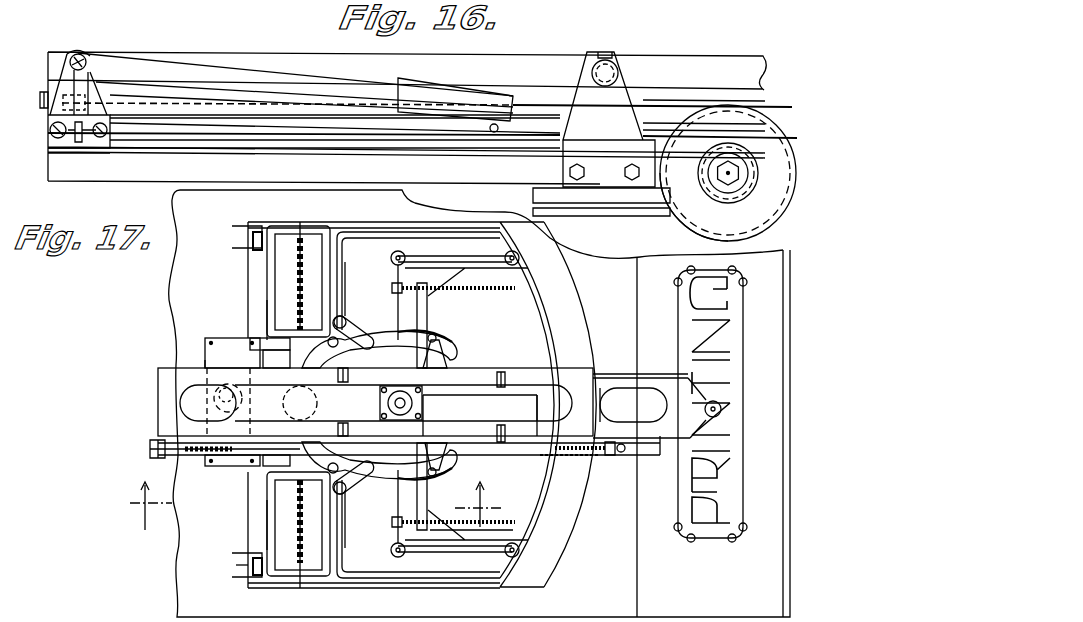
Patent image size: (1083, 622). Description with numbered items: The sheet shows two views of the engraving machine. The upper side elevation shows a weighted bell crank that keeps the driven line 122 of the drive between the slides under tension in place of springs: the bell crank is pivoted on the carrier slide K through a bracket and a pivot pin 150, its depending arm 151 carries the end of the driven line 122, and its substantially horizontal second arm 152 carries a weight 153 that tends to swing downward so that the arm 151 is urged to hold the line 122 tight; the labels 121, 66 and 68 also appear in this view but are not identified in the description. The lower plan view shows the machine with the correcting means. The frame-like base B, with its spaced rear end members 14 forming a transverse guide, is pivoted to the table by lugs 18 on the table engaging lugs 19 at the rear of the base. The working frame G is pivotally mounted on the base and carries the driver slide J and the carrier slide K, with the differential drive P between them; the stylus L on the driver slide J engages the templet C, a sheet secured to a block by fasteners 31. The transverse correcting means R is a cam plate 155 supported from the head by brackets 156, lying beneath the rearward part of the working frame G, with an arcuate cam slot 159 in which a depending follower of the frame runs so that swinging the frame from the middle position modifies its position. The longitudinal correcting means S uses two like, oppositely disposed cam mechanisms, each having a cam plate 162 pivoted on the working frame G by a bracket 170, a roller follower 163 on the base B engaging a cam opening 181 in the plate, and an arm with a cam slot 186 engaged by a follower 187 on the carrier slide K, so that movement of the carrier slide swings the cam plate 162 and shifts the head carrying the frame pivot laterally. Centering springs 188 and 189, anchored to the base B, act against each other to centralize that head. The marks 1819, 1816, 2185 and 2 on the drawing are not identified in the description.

In FIG. 16, the pivot pin 150 is at (86, 57).
In FIG. 16, the second arm of the bell crank 152 is at (214, 68).
In FIG. 16, the weight 153 is at (430, 85).
In FIG. 16, the rod 121 is at (553, 102).
In FIG. 16, the arm of the bell crank 151 is at (100, 110).
In FIG. 16, the driven line 122 is at (128, 136).
In FIG. 16, the carrier slide K is at (227, 150).
In FIG. 17, the carrier slide K is at (553, 393).
In FIG. 16, the bracket 66 is at (630, 86).
In FIG. 16, the bearing 68 is at (606, 58).
In FIG. 16, the differential drive P is at (685, 236).
In FIG. 17, the base B is at (392, 598).
In FIG. 17, the lugs 18 is at (262, 587).
In FIG. 17, the lugs 19 is at (246, 562).
In FIG. 17, the centering spring 189 is at (299, 276).
In FIG. 17, the centering spring 188 is at (299, 546).
In FIG. 17, the rear end members 14 is at (266, 511).
In FIG. 17, the cam plate 155 is at (229, 347).
In FIG. 17, the brackets 156 is at (252, 338).
In FIG. 17, the correcting means R is at (195, 364).
In FIG. 17, the link 1819 is at (342, 316).
In FIG. 17, the cam opening 181 is at (341, 318).
In FIG. 17, the cam plate 162 is at (378, 335).
In FIG. 17, the correcting means S is at (463, 351).
In FIG. 17, the rack 2 is at (453, 406).
In FIG. 17, the working frame G is at (148, 388).
In FIG. 17, the cam slot 159 is at (240, 392).
In FIG. 17, the follower 187 is at (413, 445).
In FIG. 17, the driver slide J is at (631, 367).
In FIG. 17, the stylus L is at (729, 412).
In FIG. 17, the bracket 170 is at (326, 462).
In FIG. 17, the cam slot 186 is at (456, 462).
In FIG. 17, the slide 2185 is at (447, 480).
In FIG. 17, the link 1816 is at (352, 482).
In FIG. 17, the follower 163 is at (348, 552).
In FIG. 17, the templet C is at (718, 553).
In FIG. 17, the fasteners 31 is at (691, 542).